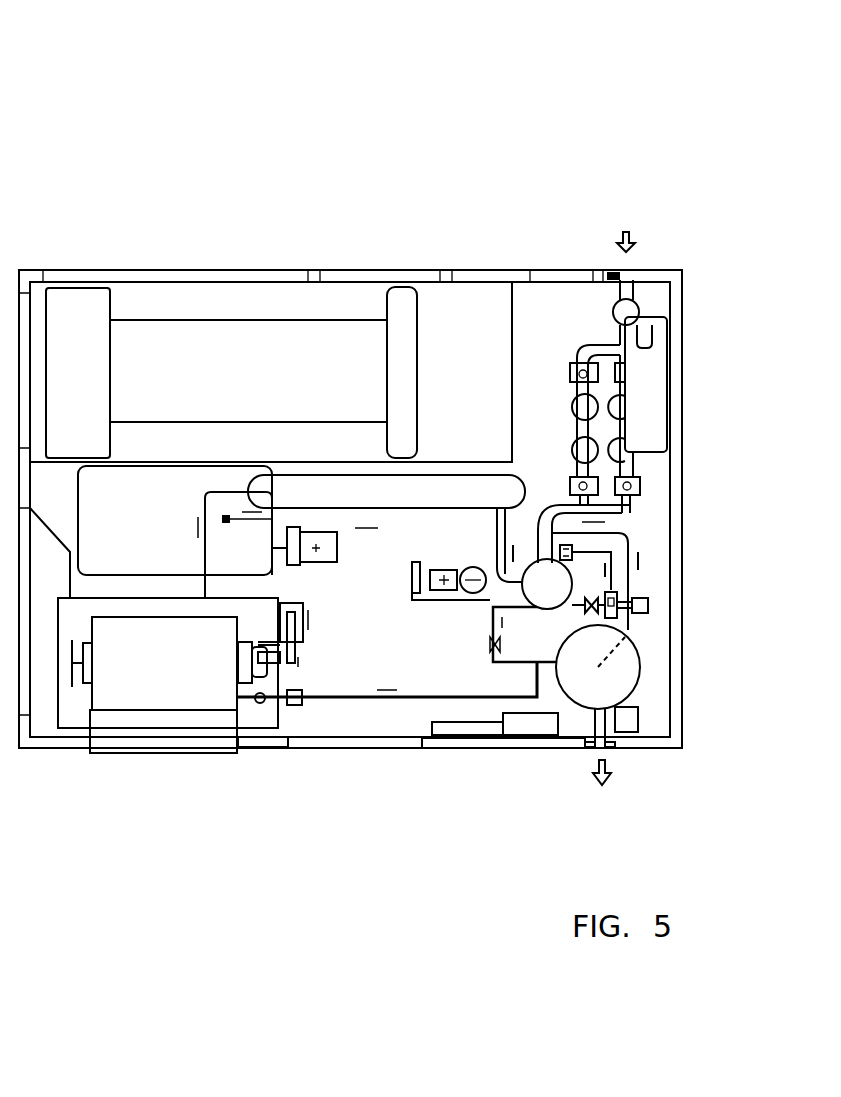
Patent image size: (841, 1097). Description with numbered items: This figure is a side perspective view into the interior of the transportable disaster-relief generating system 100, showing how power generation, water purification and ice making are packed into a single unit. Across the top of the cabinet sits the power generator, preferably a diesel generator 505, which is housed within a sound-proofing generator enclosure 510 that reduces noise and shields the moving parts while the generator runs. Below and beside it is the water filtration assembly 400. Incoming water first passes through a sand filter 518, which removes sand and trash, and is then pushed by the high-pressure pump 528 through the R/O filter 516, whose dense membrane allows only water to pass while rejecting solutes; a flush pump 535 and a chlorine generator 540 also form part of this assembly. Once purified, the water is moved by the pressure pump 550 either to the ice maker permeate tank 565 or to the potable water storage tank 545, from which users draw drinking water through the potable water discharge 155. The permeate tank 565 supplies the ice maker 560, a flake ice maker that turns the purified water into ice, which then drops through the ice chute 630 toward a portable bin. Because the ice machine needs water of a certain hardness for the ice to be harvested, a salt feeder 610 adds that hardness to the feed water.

The transportable disaster-relief generating system 100 is at (373, 85).
The water filtration assembly 400 is at (455, 128).
The sound-proofing generator enclosure 510 is at (502, 300).
The diesel generator 505 is at (258, 388).
The sand filter 518 is at (630, 310).
The R/O filter 516 is at (388, 510).
The ice maker permeate tank 565 is at (134, 521).
The pressure pump 550 is at (337, 548).
The ice maker 560 is at (180, 681).
The ice chute 630 is at (183, 749).
The salt feeder 610 is at (263, 693).
The high-pressure pump 528 is at (537, 583).
The flush pump 535 is at (648, 603).
The potable water storage tank 545 is at (621, 696).
The potable water discharge 155 is at (593, 748).
The chlorine generator 540 is at (532, 728).